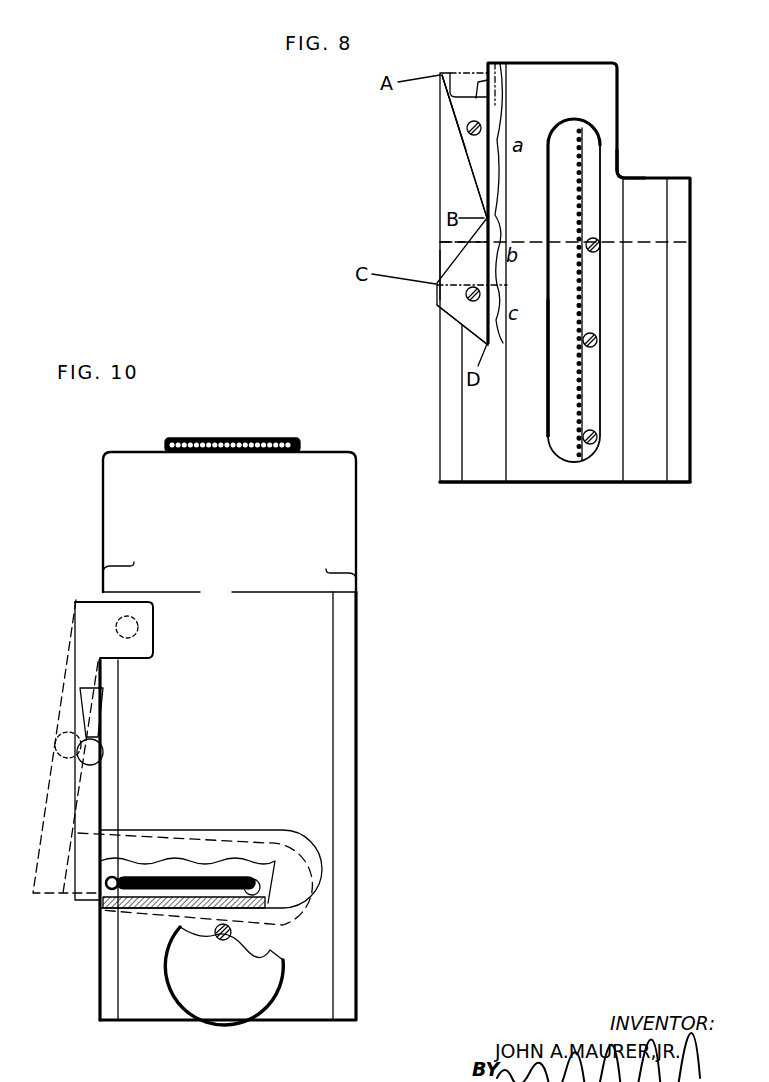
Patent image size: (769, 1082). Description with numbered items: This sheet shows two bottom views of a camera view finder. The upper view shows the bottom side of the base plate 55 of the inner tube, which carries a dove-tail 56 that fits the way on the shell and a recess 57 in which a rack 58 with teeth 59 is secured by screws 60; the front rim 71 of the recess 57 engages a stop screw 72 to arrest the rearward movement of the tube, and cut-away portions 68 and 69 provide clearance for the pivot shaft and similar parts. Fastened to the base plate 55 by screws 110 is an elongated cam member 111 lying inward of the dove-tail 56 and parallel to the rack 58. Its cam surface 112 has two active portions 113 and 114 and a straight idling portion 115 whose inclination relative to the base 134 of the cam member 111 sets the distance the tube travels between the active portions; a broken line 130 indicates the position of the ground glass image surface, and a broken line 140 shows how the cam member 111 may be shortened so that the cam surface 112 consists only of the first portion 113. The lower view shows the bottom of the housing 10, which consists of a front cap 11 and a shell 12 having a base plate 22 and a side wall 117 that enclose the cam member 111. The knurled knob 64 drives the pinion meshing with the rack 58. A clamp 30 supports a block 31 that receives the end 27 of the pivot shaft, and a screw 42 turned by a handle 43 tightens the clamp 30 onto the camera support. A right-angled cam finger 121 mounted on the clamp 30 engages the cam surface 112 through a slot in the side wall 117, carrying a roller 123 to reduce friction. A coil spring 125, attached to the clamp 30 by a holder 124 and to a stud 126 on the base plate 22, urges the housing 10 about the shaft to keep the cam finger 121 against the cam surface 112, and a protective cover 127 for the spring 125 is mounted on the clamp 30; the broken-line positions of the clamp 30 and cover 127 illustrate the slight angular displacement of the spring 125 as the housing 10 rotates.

In FIG. 10, the housing 10 is at (228, 605).
In FIG. 10, the front cap 11 is at (358, 541).
In FIG. 10, the shell 12 is at (358, 648).
In FIG. 10, the base plate 22 is at (334, 736).
In FIG. 10, the end of shaft 27 is at (132, 617).
In FIG. 10, the clamp 30 is at (73, 787).
In FIG. 10, the block 31 is at (153, 652).
In FIG. 10, the screw 42 is at (103, 754).
In FIG. 10, the handle 43 is at (104, 718).
In FIG. 8, the base plate 55 is at (691, 441).
In FIG. 8, the dove-tail 56 is at (557, 485).
In FIG. 8, the recess 57 is at (549, 306).
In FIG. 8, the rack 58 is at (593, 216).
In FIG. 8, the teeth 59 is at (577, 359).
In FIG. 8, the screws 60 is at (598, 249).
In FIG. 10, the knurled knob 64 is at (235, 1001).
In FIG. 8, the cut-away portion 68 is at (479, 82).
In FIG. 8, the cut-away portion 69 is at (619, 170).
In FIG. 8, the front rim of recess 71 is at (571, 121).
In FIG. 10, the stop screw 72 is at (228, 936).
In FIG. 8, the screws 110 is at (467, 133).
In FIG. 8, the cam member 111 is at (478, 160).
In FIG. 8, the cam surface 112 is at (472, 193).
In FIG. 8, the active portion 113 is at (458, 158).
In FIG. 8, the active portion 114 is at (456, 320).
In FIG. 8, the idling portion 115 is at (443, 260).
In FIG. 10, the side wall 117 is at (98, 998).
In FIG. 10, the cam finger 121 is at (105, 878).
In FIG. 10, the roller 123 is at (160, 907).
In FIG. 10, the holder 124 is at (108, 887).
In FIG. 10, the coil spring 125 is at (162, 877).
In FIG. 10, the stud 126 is at (258, 878).
In FIG. 10, the protective cover 127 is at (166, 831).
In FIG. 8, the broken line 130 is at (646, 242).
In FIG. 8, the base of cam member 134 is at (504, 200).
In FIG. 8, the broken line 140 is at (440, 240).